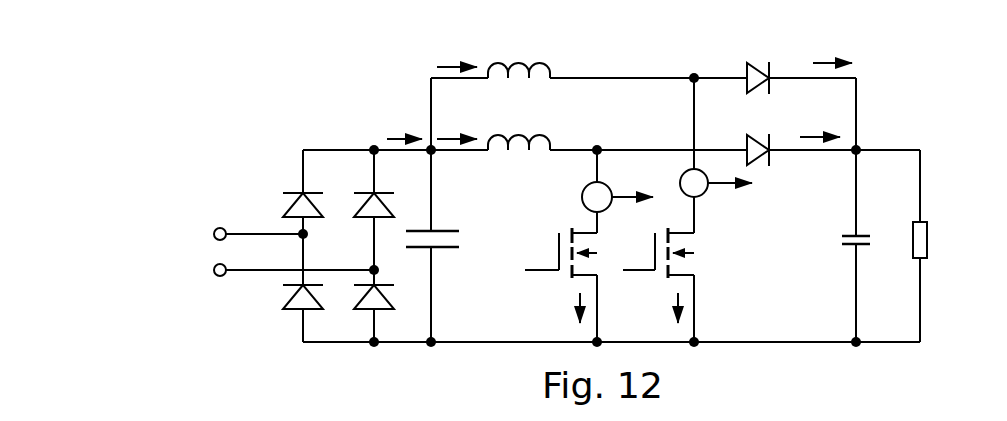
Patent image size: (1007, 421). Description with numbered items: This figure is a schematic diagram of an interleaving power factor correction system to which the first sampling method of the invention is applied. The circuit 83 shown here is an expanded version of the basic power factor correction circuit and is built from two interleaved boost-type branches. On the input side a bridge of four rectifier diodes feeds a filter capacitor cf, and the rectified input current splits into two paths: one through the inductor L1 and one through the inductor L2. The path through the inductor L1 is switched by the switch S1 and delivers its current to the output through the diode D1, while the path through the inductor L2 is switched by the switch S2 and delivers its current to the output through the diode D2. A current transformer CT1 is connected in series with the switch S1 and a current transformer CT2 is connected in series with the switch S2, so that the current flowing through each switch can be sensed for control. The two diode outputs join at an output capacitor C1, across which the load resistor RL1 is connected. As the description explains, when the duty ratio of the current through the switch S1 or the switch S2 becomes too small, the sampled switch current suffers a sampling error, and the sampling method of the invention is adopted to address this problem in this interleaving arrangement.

The circuit 83 is at (648, 24).
The filter capacitor cf is at (436, 218).
The inductor L1 is at (519, 55).
The inductor L2 is at (519, 128).
The diode D1 is at (764, 63).
The diode D2 is at (776, 163).
The current transformer CT1 is at (717, 195).
The current transformer CT2 is at (590, 197).
The switch S1 is at (681, 269).
The switch S2 is at (558, 277).
The output capacitor C1 is at (839, 237).
The load resistor RL1 is at (943, 240).